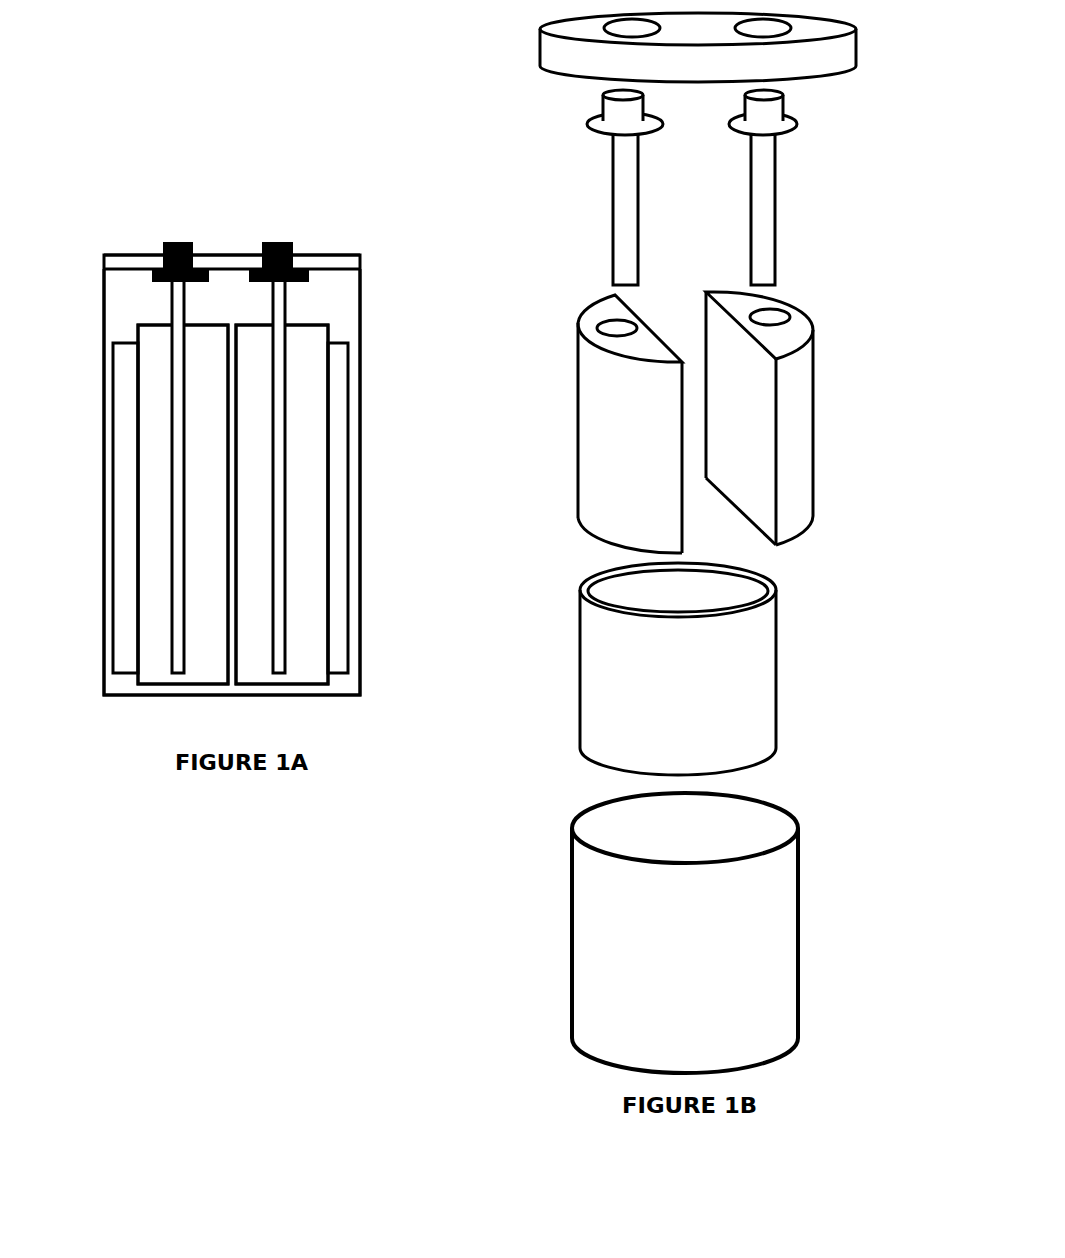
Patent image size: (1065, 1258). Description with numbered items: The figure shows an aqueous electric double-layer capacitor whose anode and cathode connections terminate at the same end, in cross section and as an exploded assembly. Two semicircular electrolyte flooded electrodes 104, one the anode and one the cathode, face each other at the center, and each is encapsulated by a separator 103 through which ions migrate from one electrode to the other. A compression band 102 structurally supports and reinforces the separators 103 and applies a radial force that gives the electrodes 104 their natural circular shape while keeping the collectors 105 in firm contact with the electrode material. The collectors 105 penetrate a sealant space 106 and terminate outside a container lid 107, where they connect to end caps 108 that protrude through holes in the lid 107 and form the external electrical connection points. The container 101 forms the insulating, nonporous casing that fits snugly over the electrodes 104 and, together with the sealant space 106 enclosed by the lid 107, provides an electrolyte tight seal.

In FIG. 1A, the container 101 is at (360, 607).
In FIG. 1B, the container 101 is at (615, 973).
In FIG. 1A, the compression band 102 is at (122, 522).
In FIG. 1B, the compression band 102 is at (623, 712).
In FIG. 1A, the separator 103 is at (138, 455).
In FIG. 1B, the separator 103 is at (615, 470).
In FIG. 1A, the electrolyte flooded electrode 104 is at (152, 378).
In FIG. 1A, the collector 105 is at (172, 309).
In FIG. 1B, the collector 105 is at (623, 178).
In FIG. 1A, the sealant space 106 is at (132, 295).
In FIG. 1A, the container lid 107 is at (340, 254).
In FIG. 1B, the container lid 107 is at (563, 55).
In FIG. 1A, the end cap 108 is at (183, 242).
In FIG. 1B, the end cap 108 is at (622, 113).